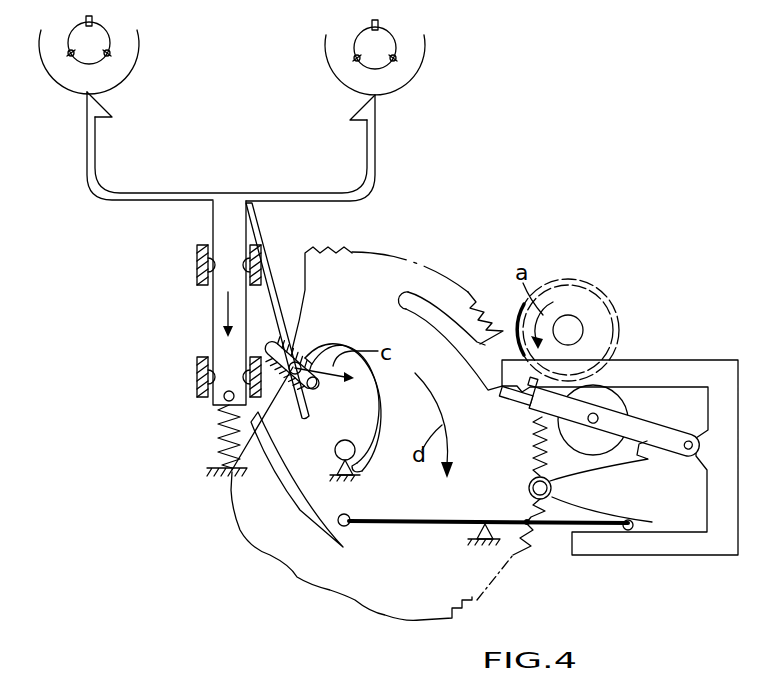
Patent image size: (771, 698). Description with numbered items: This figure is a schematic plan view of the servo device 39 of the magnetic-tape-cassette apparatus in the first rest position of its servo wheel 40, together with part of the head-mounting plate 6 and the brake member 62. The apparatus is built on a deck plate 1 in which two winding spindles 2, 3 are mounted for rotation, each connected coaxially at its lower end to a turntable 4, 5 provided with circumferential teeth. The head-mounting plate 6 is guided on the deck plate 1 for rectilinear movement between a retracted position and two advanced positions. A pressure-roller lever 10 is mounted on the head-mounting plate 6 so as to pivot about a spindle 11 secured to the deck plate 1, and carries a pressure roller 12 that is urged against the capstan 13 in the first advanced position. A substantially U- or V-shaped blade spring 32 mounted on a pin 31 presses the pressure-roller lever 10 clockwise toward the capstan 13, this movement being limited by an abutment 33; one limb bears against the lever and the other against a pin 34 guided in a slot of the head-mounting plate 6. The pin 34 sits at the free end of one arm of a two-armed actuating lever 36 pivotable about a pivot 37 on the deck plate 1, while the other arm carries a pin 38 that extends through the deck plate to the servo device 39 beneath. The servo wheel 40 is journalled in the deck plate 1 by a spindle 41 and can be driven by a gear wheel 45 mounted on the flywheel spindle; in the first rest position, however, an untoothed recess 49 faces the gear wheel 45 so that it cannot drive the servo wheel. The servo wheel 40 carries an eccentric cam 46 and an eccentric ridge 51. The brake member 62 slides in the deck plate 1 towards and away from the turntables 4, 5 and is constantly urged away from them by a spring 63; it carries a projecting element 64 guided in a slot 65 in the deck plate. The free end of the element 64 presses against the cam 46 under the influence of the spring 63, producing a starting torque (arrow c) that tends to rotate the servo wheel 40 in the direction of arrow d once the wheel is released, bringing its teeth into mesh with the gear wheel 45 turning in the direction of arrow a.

The deck plate 1 is at (198, 262).
The winding spindle 2 is at (93, 51).
The winding spindle 3 is at (380, 57).
The turntable 4 is at (125, 50).
The turntable 5 is at (413, 53).
The head-mounting plate 6 is at (713, 535).
The pressure-roller lever 10 is at (665, 443).
The spindle 11 is at (688, 450).
The pressure roller 12 is at (617, 402).
The capstan 13 is at (577, 322).
The pin 31 is at (529, 487).
The blade spring 32 is at (580, 502).
The abutment 33 is at (512, 395).
The pin 34 is at (628, 532).
The actuating lever 36 is at (420, 528).
The pivot 37 is at (472, 530).
The pin 38 is at (351, 528).
The servo device 39 is at (226, 532).
The servo wheel 40 is at (375, 270).
The spindle 41 is at (335, 450).
The gear wheel 45 is at (575, 300).
The cam 46 is at (385, 402).
The recess 49 is at (495, 350).
The ridge 51 is at (307, 515).
The brake member 62 is at (225, 222).
The spring 63 is at (218, 433).
The projecting element 64 is at (273, 293).
The slot 65 is at (317, 389).